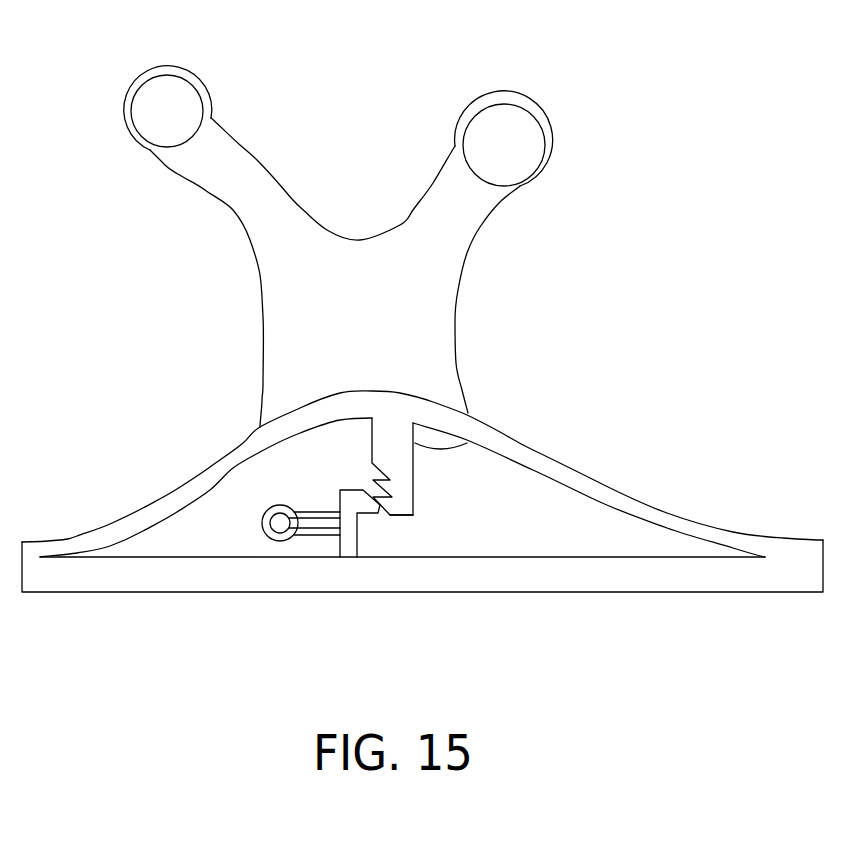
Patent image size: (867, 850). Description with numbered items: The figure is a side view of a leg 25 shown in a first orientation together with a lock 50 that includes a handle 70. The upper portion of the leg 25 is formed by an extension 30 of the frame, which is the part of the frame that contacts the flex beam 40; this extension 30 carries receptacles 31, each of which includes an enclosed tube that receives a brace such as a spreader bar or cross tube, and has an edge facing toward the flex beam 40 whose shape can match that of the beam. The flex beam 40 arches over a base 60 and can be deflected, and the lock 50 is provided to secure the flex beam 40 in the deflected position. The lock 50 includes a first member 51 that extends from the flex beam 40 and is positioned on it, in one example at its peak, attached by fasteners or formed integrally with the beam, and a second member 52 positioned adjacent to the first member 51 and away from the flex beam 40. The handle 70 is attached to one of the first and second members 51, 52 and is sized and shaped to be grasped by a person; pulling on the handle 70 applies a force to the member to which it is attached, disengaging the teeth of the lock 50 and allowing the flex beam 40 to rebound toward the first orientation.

The leg 25 is at (636, 177).
The extension of the frame 30 is at (326, 258).
The receptacles 31 is at (167, 107).
The flex beam 40 is at (615, 500).
The lock 50 is at (467, 443).
The first member 51 is at (403, 466).
The second member 52 is at (347, 542).
The base plate 60 is at (642, 568).
The handle 70 is at (262, 520).